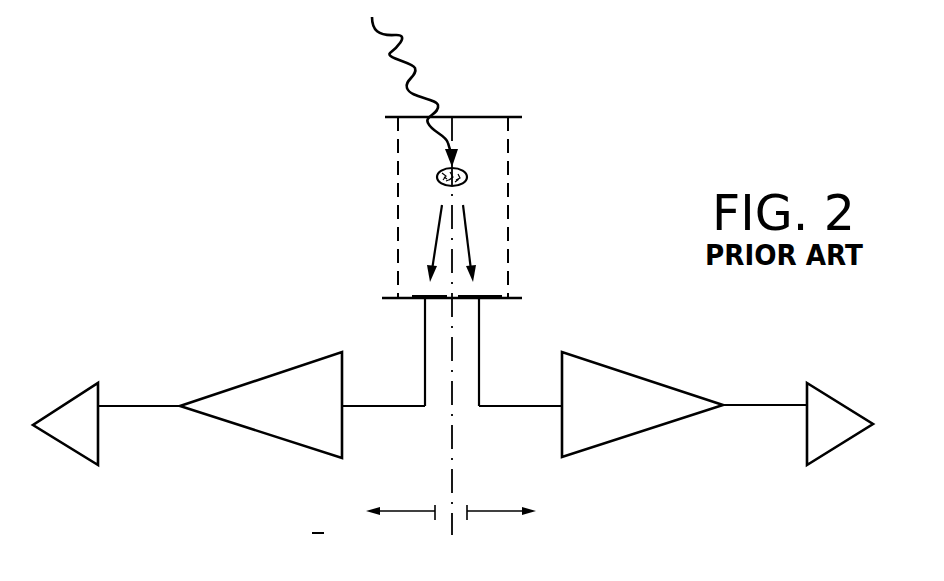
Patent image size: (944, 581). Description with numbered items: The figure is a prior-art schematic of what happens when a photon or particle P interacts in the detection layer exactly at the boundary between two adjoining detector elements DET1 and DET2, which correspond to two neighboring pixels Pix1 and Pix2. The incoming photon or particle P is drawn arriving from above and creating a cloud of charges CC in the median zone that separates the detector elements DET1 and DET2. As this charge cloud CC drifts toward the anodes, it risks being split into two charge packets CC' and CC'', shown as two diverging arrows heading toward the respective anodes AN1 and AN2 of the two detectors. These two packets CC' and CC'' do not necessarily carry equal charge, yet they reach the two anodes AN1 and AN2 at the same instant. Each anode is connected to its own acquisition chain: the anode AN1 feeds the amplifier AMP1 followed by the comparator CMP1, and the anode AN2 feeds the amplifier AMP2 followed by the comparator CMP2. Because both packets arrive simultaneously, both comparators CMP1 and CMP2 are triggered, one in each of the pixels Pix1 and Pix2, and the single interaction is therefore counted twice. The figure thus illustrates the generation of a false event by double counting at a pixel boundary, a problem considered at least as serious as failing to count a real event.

The photon or particle P is at (393, 51).
The first detector element DET1 is at (406, 152).
The second detector element DET2 is at (498, 145).
The charge cloud CC is at (518, 173).
The first charge packet CC' is at (374, 236).
The second charge packet CC'' is at (535, 243).
The first anode AN1 is at (413, 296).
The second anode AN2 is at (492, 295).
The first amplifier AMP1 is at (248, 415).
The second amplifier AMP2 is at (663, 414).
The first comparator CMP1 is at (62, 417).
The second comparator CMP2 is at (843, 410).
The first pixel Pix1 is at (395, 526).
The second pixel Pix2 is at (505, 526).